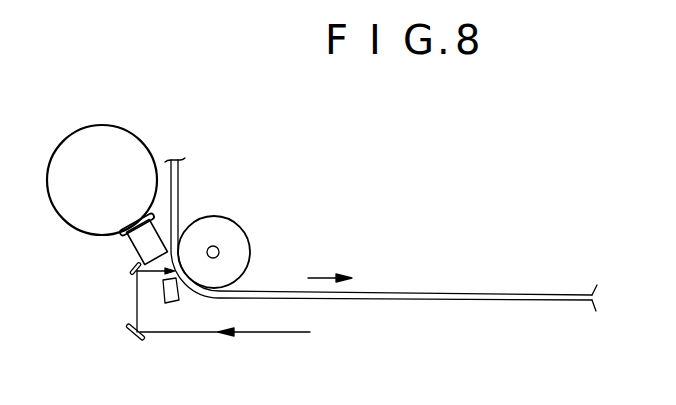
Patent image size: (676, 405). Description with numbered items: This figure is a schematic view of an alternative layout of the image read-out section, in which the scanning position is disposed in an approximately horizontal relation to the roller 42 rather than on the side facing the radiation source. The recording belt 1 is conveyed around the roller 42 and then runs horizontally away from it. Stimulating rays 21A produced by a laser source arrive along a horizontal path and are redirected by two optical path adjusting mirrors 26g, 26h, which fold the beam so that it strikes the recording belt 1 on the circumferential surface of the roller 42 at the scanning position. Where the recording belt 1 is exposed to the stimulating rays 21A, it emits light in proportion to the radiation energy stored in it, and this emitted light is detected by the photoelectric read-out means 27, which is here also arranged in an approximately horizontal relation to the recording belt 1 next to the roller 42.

The photoelectric read-out means 27 is at (97, 248).
The recording belt 1 is at (445, 301).
The roller 42 is at (237, 248).
The optical path adjusting mirror 26h is at (130, 275).
The optical path adjusting mirror 26g is at (140, 341).
The stimulating rays 21A is at (268, 335).